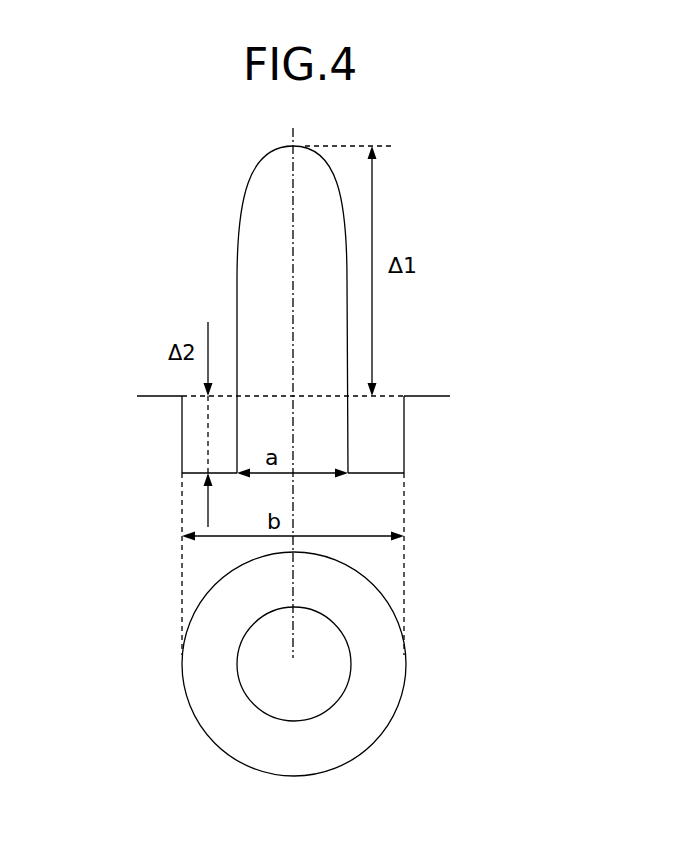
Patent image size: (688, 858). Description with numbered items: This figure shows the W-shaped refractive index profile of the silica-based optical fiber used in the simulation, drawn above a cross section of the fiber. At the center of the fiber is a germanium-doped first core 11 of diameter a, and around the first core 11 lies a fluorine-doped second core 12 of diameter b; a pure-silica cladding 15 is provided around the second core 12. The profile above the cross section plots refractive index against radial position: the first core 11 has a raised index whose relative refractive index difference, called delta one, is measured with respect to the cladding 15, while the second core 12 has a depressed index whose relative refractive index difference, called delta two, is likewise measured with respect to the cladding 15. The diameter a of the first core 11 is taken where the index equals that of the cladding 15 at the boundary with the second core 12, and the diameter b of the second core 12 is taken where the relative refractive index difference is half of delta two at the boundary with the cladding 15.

The first core 11 is at (322, 692).
The second core 12 is at (377, 702).
The cladding 15 is at (415, 680).